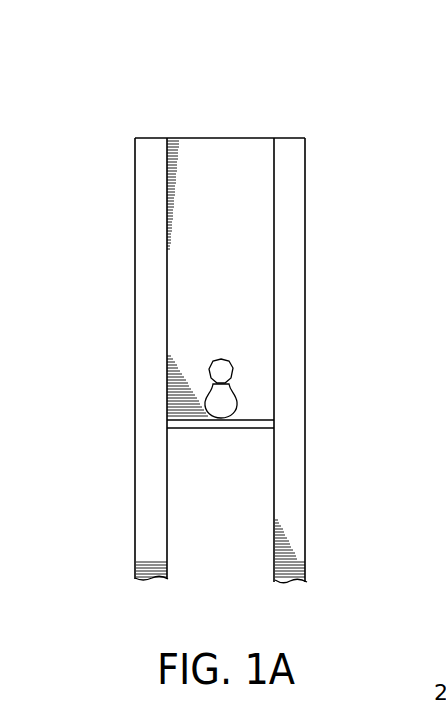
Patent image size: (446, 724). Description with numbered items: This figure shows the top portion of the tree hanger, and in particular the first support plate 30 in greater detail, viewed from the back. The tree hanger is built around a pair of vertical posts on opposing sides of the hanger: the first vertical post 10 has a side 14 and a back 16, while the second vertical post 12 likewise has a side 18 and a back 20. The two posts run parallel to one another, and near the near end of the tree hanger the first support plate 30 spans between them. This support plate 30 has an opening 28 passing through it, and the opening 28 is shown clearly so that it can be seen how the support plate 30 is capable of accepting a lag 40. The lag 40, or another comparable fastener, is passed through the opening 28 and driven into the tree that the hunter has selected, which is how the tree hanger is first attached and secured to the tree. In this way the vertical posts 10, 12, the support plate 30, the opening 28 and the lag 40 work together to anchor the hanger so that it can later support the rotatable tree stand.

The first vertical post 10 is at (305, 160).
The second vertical post 12 is at (135, 185).
The side 14 is at (305, 209).
The back 16 is at (298, 268).
The side 18 is at (138, 303).
The back 20 is at (145, 396).
The opening 28 is at (219, 405).
The first support plate 30 is at (239, 104).
The lag 40 is at (232, 367).